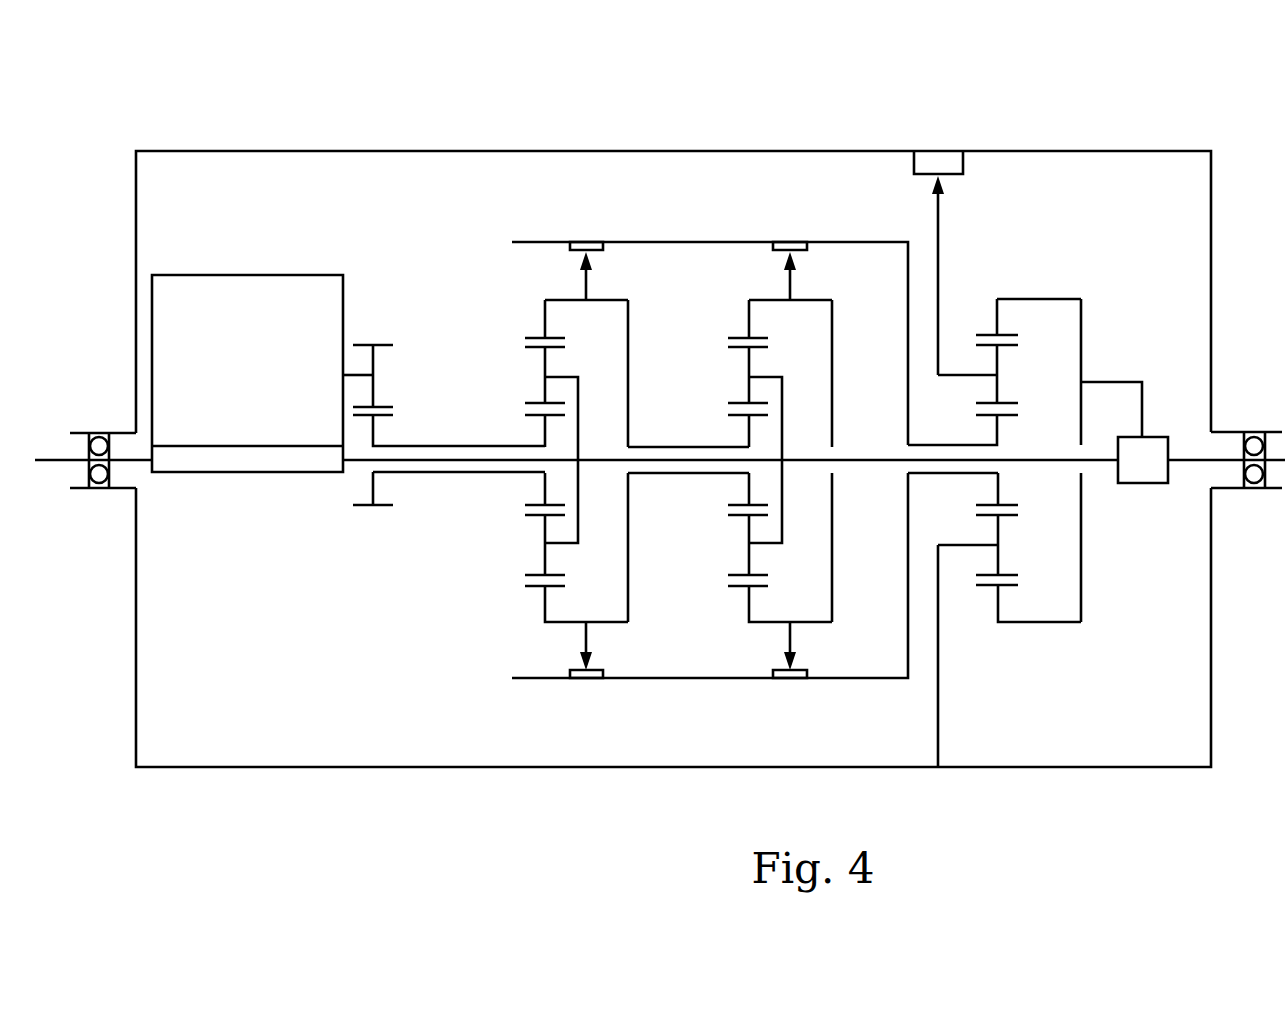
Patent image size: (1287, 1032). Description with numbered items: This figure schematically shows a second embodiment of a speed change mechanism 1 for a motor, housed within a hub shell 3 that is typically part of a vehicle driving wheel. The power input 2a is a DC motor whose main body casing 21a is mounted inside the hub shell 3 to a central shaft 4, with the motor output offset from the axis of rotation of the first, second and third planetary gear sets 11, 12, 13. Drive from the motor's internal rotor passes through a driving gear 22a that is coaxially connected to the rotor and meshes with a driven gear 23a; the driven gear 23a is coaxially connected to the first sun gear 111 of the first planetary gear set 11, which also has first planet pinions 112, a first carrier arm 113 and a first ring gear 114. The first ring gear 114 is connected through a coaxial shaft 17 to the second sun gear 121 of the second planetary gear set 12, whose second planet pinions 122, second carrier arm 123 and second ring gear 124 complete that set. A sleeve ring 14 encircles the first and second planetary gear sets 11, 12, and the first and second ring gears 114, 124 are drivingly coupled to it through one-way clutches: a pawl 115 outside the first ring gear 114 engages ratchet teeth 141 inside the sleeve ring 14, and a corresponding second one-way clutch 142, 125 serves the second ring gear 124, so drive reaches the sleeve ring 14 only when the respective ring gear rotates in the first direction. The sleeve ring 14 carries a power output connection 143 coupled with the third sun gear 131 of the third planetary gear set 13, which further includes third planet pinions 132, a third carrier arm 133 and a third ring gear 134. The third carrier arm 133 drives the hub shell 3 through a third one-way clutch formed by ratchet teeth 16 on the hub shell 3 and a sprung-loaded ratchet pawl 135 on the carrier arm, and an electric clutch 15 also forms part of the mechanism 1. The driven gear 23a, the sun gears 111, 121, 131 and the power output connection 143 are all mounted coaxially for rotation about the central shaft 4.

The speed change mechanism 1 is at (480, 699).
The power input 2a is at (348, 274).
The main body casing 21a is at (343, 318).
The driving gear 22a is at (373, 360).
The driven gear 23a is at (373, 440).
The hub shell 3 is at (625, 768).
The central shaft 4 is at (356, 462).
The first planetary gear set 11 is at (514, 603).
The second planetary gear set 12 is at (740, 603).
The third planetary gear set 13 is at (1034, 629).
The sleeve ring 14 is at (620, 680).
The electric clutch 15 is at (1155, 436).
The ratchet teeth 16 is at (962, 150).
The coaxial shaft 17 is at (652, 476).
The first sun gear 111 is at (545, 495).
The first planet pinions 112 is at (545, 392).
The first carrier arm 113 is at (580, 396).
The first ring gear 114 is at (628, 568).
The pawl 115 is at (591, 264).
The second sun gear 121 is at (749, 495).
The second planet pinions 122 is at (749, 392).
The second carrier arm 123 is at (784, 396).
The second ring gear 124 is at (832, 543).
The second one-way clutch pawl 125 is at (796, 264).
The third sun gear 131 is at (998, 490).
The third planet pinions 132 is at (1000, 356).
The third carrier arm 133 is at (940, 378).
The third ring gear 134 is at (1081, 541).
The ratchet pawl 135 is at (946, 184).
The ratchet teeth 141 is at (570, 250).
The second one-way clutch ratchet teeth 142 is at (773, 250).
The power output connection 143 is at (940, 477).